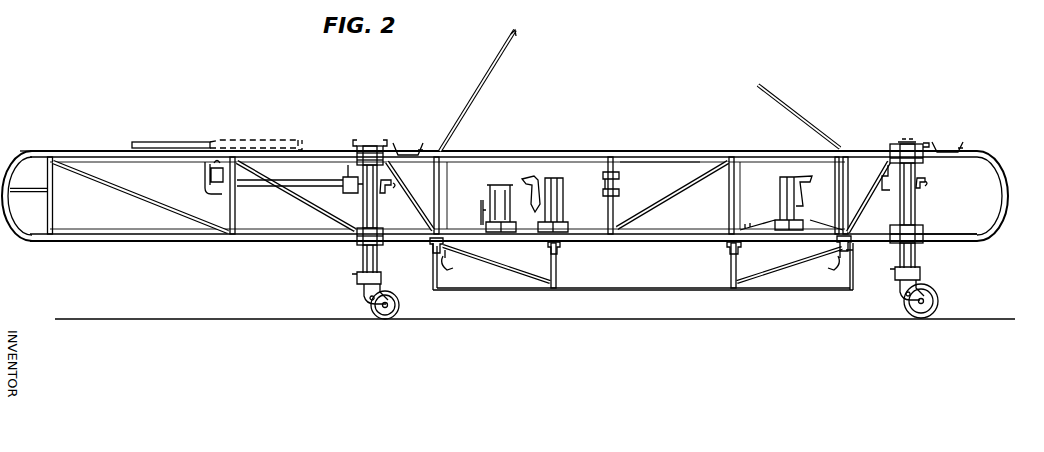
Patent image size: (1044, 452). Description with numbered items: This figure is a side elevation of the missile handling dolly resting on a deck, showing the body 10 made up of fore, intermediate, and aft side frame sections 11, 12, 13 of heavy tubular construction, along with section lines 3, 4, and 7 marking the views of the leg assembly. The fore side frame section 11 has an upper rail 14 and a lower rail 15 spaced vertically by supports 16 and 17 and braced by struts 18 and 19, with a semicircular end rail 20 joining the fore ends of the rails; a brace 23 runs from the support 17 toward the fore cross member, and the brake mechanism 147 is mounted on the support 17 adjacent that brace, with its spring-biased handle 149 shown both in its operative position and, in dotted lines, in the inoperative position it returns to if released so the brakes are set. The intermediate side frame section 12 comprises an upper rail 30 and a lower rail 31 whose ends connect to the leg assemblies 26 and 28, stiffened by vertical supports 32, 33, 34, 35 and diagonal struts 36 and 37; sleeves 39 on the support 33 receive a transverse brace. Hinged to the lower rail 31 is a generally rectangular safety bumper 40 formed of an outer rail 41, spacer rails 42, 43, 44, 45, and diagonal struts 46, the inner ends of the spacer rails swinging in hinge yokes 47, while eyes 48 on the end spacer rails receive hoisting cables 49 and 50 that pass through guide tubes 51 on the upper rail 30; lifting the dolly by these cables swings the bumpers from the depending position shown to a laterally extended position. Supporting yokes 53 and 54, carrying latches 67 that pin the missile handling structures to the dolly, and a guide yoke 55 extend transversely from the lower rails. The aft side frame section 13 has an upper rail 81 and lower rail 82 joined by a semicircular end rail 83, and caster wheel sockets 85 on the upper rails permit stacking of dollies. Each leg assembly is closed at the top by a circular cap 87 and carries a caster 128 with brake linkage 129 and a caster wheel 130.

The section line 3- 3 is at (898, 105).
The section line 4- 4 is at (392, 128).
The section line 7- 7 is at (341, 288).
The body 10 is at (661, 191).
The fore side frame section 11 is at (38, 149).
The intermediate side frame section 12 is at (599, 150).
The aft side frame section 13 is at (977, 150).
The upper rail 14 is at (78, 150).
The lower rail 15 is at (133, 237).
The support 16 is at (53, 215).
The support 17 is at (236, 215).
The strut 18 is at (153, 200).
The strut 19 is at (315, 208).
The semicircular end rail 20 is at (15, 237).
The brace 23 is at (309, 180).
The leg assembly 26 is at (384, 141).
The leg assembly 28 is at (917, 206).
The upper rail 30 is at (655, 152).
The lower rail 31 is at (658, 236).
The vertical support 32 is at (446, 200).
The vertical support 33 is at (613, 220).
The vertical support 34 is at (737, 207).
The vertical support 35 is at (843, 203).
The diagonal strut 36 is at (667, 197).
The diagonal strut 37 is at (413, 188).
The sleeve 39 is at (603, 186).
The safety bumper 40 is at (657, 279).
The outer rail 41 is at (655, 290).
The spacer rail 42 is at (447, 281).
The spacer rail 43 is at (557, 266).
The spacer rail 44 is at (731, 263).
The spacer rail 45 is at (853, 262).
The diagonal strut 46 is at (513, 276).
The hinge yoke 47 is at (429, 250).
The eye 48 is at (447, 262).
The hoisting cable 49 is at (489, 78).
The hoisting cable 50 is at (780, 99).
The guide tube 51 is at (838, 149).
The supporting yoke 53 is at (554, 178).
The supporting yoke 54 is at (786, 176).
The guide yoke 55 is at (506, 182).
The latch 67 is at (531, 172).
The upper rail 81 is at (930, 145).
The lower rail 82 is at (958, 240).
The semicircular end rail 83 is at (990, 225).
The caster wheel socket 85 is at (418, 142).
The circular cap 87 is at (888, 140).
The caster 128 is at (360, 298).
The brake linkage 129 is at (354, 275).
The caster wheel 130 is at (385, 320).
The brake mechanism 147 is at (205, 186).
The handle 149 is at (153, 134).